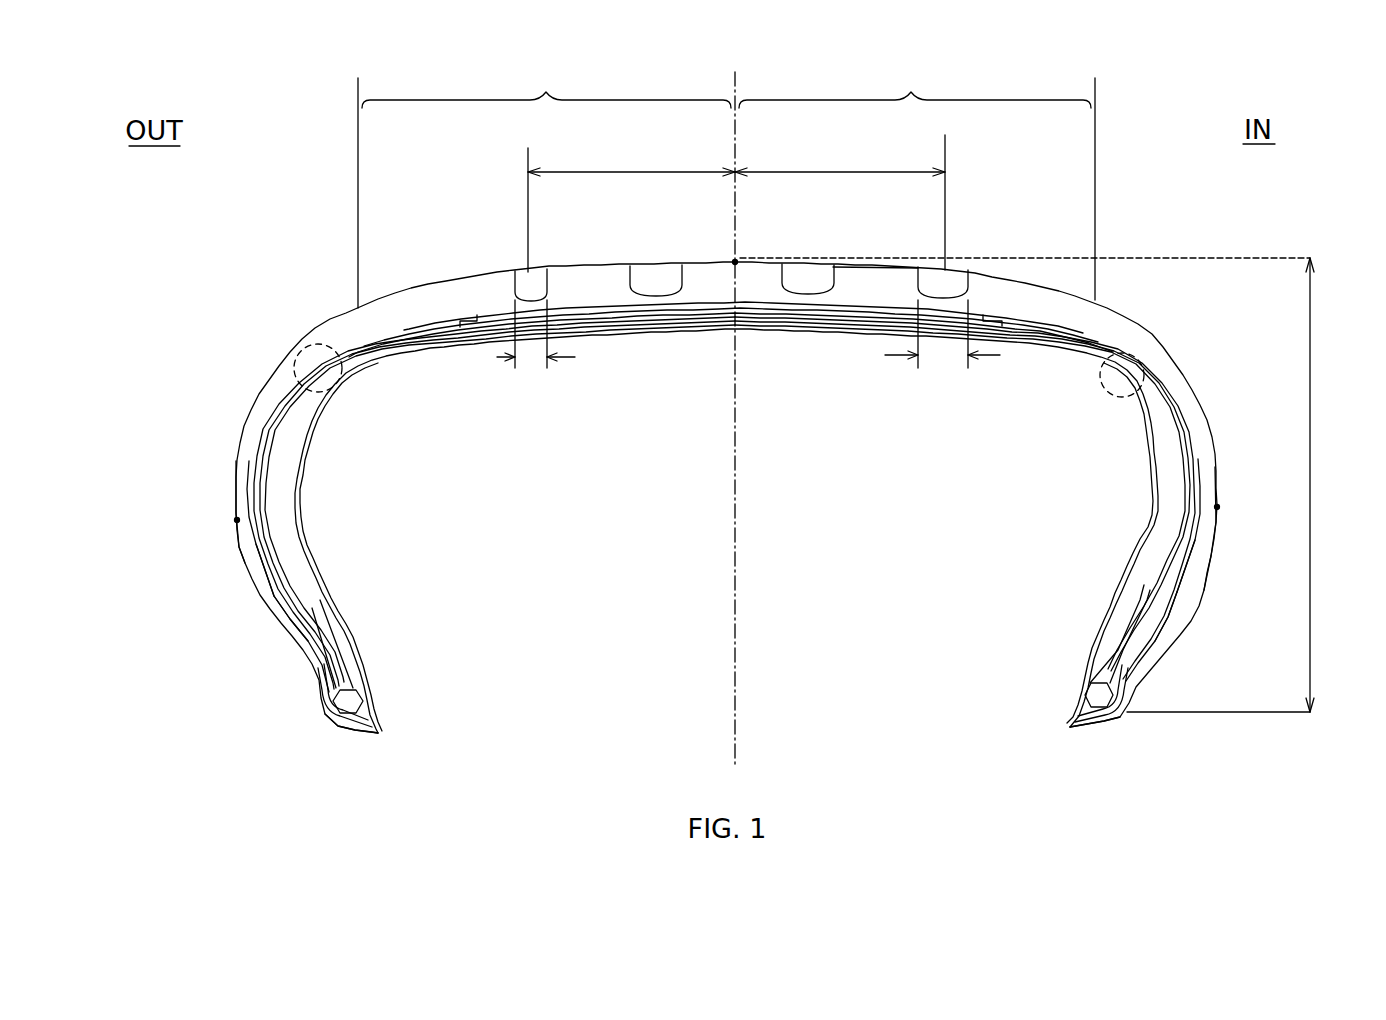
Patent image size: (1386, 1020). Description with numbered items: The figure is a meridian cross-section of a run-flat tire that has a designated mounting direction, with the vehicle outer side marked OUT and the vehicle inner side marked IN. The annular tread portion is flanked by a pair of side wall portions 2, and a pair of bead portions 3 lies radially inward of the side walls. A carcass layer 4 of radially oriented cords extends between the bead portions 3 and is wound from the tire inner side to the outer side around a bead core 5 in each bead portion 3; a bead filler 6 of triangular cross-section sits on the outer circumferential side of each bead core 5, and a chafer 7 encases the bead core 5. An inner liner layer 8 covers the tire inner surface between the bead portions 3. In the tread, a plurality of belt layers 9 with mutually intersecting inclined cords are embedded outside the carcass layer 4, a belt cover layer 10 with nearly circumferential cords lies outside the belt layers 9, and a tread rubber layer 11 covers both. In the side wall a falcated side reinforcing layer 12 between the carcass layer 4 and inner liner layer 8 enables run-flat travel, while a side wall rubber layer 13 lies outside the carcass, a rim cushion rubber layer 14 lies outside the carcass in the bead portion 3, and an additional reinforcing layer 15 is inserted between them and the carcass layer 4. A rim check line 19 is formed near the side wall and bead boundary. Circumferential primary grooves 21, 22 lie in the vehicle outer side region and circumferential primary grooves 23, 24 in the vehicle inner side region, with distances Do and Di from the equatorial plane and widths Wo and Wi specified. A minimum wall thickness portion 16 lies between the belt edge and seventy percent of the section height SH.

The side wall portion 2 is at (240, 448).
The bead portion 3 is at (318, 698).
The carcass layer 4 is at (1165, 412).
The bead core 5 is at (350, 700).
The bead filler 6 is at (335, 660).
The chafer 7 is at (375, 725).
The inner liner layer 8 is at (1075, 355).
The belt layer 9 is at (850, 317).
The belt cover layer 10 is at (1013, 312).
The tread rubber layer 11 is at (893, 270).
The side reinforcing layer 12 is at (298, 515).
The side wall rubber layer 13 is at (245, 530).
The rim cushion rubber layer 14 is at (273, 620).
The additional reinforcing layer 15 is at (258, 573).
The minimum wall thickness portion 16 is at (335, 350).
The rim check line 19 is at (285, 635).
The circumferential primary groove 21 is at (528, 285).
The circumferential primary groove 22 is at (657, 290).
The circumferential primary groove 23 is at (806, 288).
The circumferential primary groove 24 is at (950, 290).